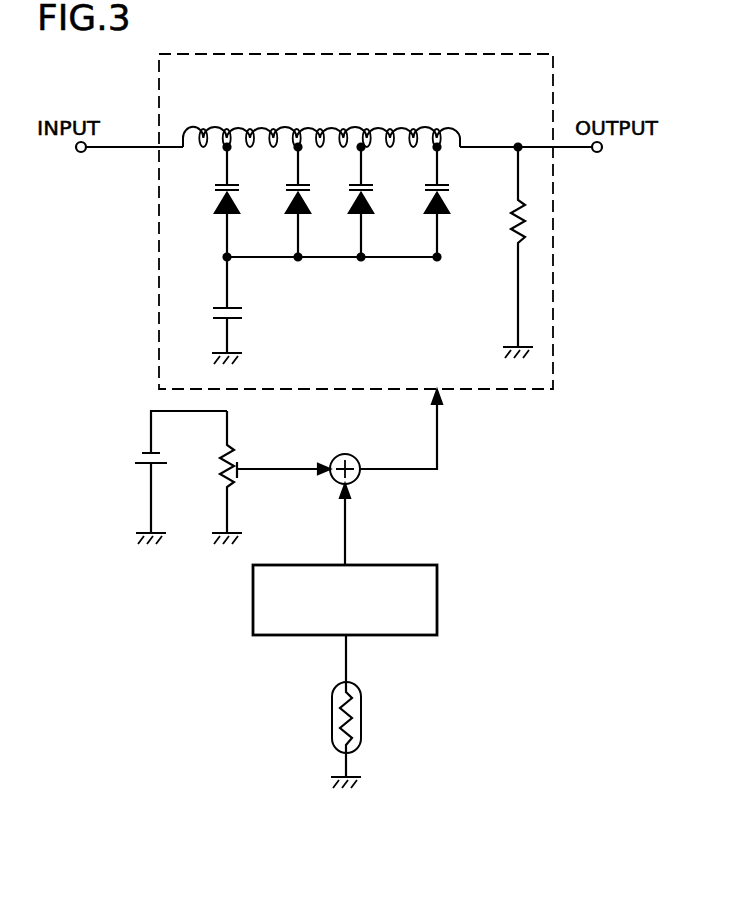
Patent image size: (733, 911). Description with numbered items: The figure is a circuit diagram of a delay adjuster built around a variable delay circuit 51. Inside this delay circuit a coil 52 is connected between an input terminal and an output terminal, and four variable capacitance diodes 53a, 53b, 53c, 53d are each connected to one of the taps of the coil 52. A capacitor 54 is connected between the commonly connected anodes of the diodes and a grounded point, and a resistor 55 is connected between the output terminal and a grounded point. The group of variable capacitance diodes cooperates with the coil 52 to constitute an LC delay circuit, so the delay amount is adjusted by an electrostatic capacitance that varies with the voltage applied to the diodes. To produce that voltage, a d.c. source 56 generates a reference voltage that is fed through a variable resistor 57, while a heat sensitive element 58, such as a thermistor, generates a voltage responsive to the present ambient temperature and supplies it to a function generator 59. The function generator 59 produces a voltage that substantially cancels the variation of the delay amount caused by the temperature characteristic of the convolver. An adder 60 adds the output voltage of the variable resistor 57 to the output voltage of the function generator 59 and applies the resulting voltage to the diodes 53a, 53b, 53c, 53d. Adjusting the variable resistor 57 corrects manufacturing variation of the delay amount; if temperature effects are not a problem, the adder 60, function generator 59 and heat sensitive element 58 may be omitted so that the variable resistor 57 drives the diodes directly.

The variable delay circuit 51 is at (464, 53).
The coil 52 is at (410, 97).
The variable capacitance diode 53a is at (217, 203).
The variable capacitance diode 53b is at (284, 203).
The variable capacitance diode 53c is at (349, 203).
The variable capacitance diode 53d is at (424, 202).
The capacitor 54 is at (243, 316).
The resistor 55 is at (516, 208).
The d.c. source 56 is at (140, 456).
The variable resistor 57 is at (232, 452).
The heat sensitive element 58 is at (362, 709).
The function generator 59 is at (437, 568).
The adder 60 is at (340, 454).